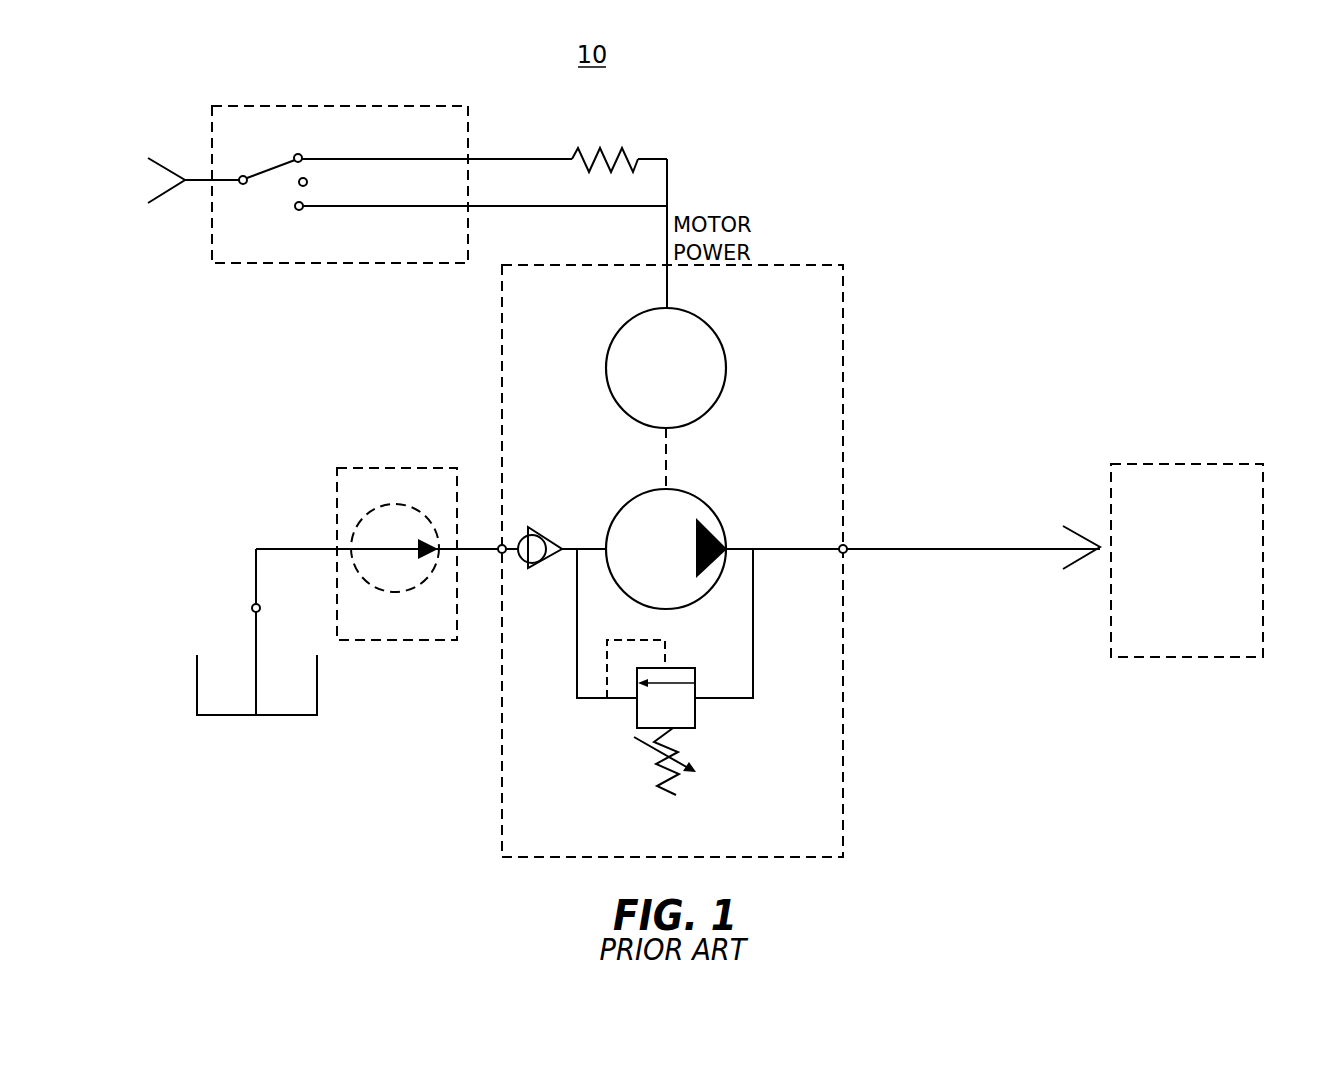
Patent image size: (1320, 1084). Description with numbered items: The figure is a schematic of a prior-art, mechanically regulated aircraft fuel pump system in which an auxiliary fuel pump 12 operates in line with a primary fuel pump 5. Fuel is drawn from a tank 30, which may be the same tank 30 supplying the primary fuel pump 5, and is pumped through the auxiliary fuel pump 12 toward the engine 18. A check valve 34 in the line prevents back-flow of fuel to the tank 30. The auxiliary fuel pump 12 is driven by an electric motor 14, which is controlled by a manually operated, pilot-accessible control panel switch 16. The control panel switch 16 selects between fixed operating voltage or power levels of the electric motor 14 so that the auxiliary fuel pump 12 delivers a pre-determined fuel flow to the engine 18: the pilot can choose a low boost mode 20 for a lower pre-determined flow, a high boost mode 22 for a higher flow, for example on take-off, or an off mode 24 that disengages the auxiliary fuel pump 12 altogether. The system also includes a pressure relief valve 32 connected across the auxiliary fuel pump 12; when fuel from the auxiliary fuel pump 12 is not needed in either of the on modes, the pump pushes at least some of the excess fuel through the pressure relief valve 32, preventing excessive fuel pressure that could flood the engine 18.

The control panel switch 16 is at (224, 85).
The low boost mode 20 is at (462, 146).
The off mode 24 is at (367, 182).
The high boost mode 22 is at (500, 207).
The electric motor 14 is at (727, 369).
The auxiliary fuel pump 12 is at (721, 521).
The primary fuel pump 5 is at (363, 515).
The check valve 34 is at (523, 556).
The tank 30 is at (256, 643).
The pressure relief valve 32 is at (695, 713).
The engine 18 is at (1229, 657).